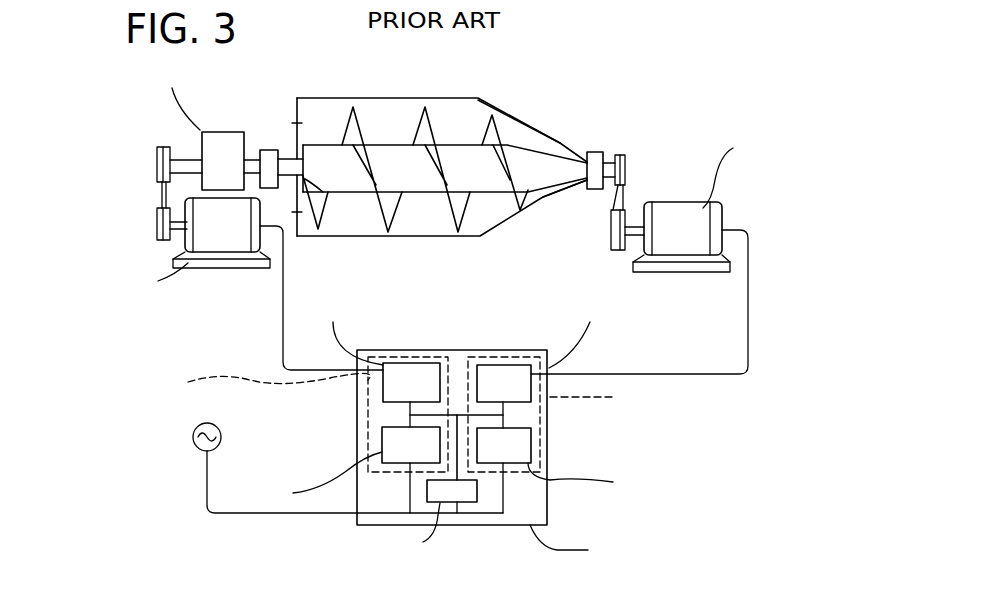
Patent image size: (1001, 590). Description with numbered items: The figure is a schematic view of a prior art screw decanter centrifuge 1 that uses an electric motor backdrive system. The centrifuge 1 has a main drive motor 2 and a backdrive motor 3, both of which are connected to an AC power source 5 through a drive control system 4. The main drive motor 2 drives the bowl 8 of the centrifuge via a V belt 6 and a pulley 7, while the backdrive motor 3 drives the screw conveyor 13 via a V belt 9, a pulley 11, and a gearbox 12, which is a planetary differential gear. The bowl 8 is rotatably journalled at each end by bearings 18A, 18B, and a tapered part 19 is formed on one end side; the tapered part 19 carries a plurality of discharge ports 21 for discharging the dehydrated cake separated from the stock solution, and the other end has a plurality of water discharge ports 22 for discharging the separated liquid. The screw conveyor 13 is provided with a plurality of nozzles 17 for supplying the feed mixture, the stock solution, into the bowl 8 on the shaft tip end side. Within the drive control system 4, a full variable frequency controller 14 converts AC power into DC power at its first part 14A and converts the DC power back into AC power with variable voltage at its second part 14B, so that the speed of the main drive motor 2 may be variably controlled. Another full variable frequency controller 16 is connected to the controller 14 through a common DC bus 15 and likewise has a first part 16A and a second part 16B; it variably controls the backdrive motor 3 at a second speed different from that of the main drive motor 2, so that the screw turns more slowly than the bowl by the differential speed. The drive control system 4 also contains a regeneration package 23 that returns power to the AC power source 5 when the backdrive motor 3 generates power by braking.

The screw decanter centrifuge 1 is at (428, 159).
The main drive motor 2 is at (685, 210).
The backdrive motor 3 is at (220, 242).
The drive control system 4 is at (476, 430).
The AC power source 5 is at (208, 423).
The V belt 6 is at (615, 200).
The pulley 7 is at (627, 157).
The bowl 8 is at (415, 240).
The V belt 9 is at (157, 202).
The pulley 11 is at (168, 147).
The gearbox 12 is at (217, 132).
The screw conveyor 13 is at (460, 218).
The full variable frequency controller 14 is at (689, 419).
The first part of full variable frequency controller 14A is at (528, 456).
The second part of full variable frequency controller 14B is at (520, 372).
The common DC bus 15 is at (457, 415).
The full variable frequency controller 16 is at (245, 392).
The first part of full variable frequency controller 16A is at (382, 447).
The second part of full variable frequency controller 16B is at (410, 370).
The nozzles 17 is at (472, 142).
The bearing 18A is at (267, 150).
The bearing 18B is at (595, 152).
The tapered part 19 is at (511, 124).
The discharge ports 21 is at (541, 150).
The water discharge ports 22 is at (297, 124).
The regeneration package 23 is at (477, 493).